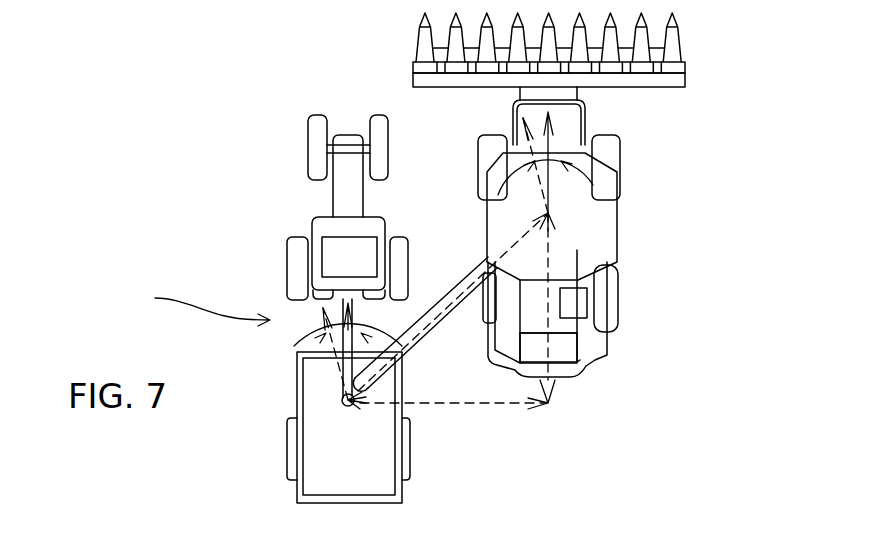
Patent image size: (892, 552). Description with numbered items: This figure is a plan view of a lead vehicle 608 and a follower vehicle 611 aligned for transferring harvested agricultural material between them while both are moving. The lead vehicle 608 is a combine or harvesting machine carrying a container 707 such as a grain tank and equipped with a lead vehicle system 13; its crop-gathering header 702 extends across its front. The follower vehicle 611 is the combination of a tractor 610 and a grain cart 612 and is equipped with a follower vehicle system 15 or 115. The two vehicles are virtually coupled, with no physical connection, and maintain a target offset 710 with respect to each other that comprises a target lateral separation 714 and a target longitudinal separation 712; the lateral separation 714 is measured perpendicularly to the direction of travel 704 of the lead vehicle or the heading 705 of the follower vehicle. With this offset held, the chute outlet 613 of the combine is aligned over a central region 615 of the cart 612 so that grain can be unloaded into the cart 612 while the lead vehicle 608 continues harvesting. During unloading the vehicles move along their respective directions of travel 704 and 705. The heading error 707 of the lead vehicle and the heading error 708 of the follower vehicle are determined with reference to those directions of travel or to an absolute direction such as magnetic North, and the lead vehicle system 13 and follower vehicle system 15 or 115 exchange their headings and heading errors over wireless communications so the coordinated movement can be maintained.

The header 702 is at (517, 101).
The lead vehicle 608 is at (583, 113).
The direction of travel 704 is at (553, 133).
The heading error of the lead vehicle 707 is at (537, 182).
The target offset 710 is at (430, 310).
The lead vehicle system 13 is at (588, 305).
The target longitudinal separation 712 is at (580, 360).
The target lateral separation 714 is at (482, 403).
The tractor 610 is at (280, 207).
The follower vehicle system 15 is at (264, 247).
The follower vehicle system 115 is at (323, 255).
The follower vehicle 611 is at (196, 306).
The heading error of the follower vehicle 708 is at (322, 345).
The heading of the follower vehicle 705 is at (343, 366).
The chute outlet 613 is at (350, 406).
The region 615 is at (367, 465).
The grain cart 612 is at (297, 493).